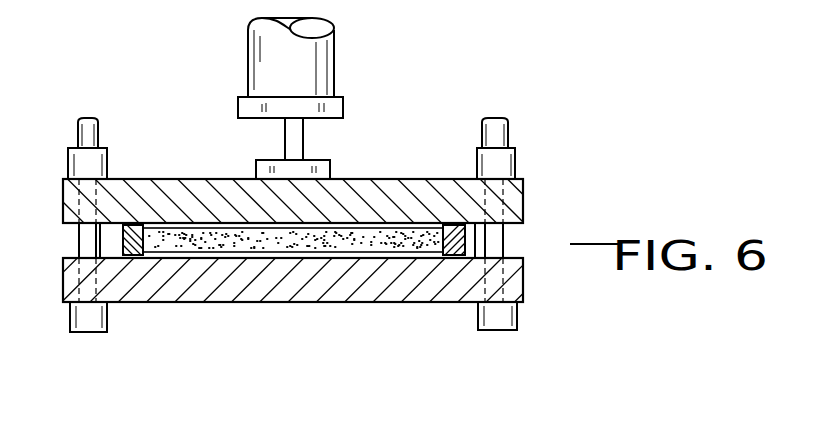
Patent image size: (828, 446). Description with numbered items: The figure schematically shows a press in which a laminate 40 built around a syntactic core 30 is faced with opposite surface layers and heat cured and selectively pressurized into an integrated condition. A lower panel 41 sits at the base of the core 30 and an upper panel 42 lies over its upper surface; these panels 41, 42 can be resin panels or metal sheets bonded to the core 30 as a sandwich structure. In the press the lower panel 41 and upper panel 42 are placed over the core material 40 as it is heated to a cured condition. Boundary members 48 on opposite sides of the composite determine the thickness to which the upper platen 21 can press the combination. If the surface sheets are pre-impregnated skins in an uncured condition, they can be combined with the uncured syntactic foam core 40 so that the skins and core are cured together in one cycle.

The upper platen 21 is at (154, 178).
The lower panel 41 is at (302, 258).
The boundary members 48 is at (122, 257).
The upper panel 42 is at (344, 226).
The syntactic core 30 is at (247, 242).
The laminate 40 is at (401, 242).